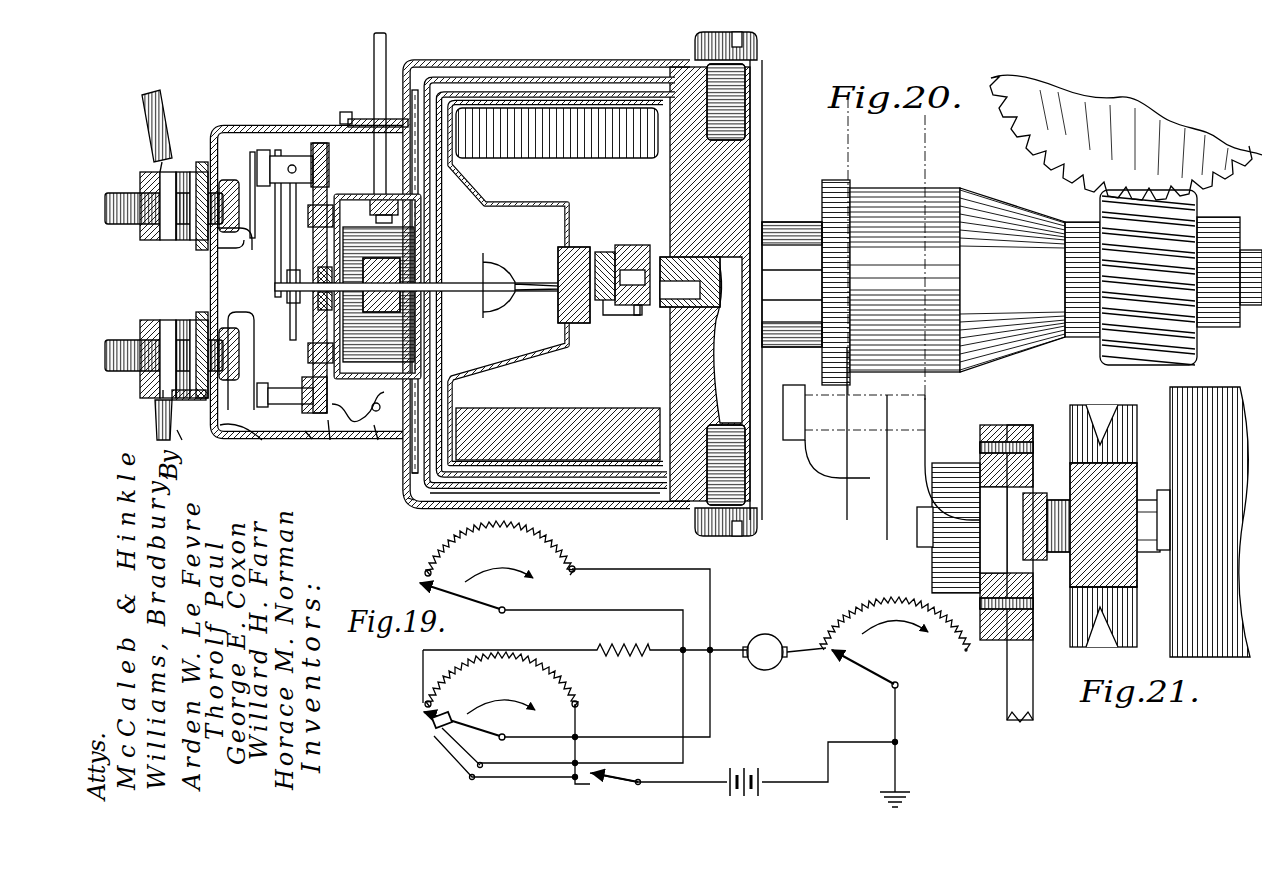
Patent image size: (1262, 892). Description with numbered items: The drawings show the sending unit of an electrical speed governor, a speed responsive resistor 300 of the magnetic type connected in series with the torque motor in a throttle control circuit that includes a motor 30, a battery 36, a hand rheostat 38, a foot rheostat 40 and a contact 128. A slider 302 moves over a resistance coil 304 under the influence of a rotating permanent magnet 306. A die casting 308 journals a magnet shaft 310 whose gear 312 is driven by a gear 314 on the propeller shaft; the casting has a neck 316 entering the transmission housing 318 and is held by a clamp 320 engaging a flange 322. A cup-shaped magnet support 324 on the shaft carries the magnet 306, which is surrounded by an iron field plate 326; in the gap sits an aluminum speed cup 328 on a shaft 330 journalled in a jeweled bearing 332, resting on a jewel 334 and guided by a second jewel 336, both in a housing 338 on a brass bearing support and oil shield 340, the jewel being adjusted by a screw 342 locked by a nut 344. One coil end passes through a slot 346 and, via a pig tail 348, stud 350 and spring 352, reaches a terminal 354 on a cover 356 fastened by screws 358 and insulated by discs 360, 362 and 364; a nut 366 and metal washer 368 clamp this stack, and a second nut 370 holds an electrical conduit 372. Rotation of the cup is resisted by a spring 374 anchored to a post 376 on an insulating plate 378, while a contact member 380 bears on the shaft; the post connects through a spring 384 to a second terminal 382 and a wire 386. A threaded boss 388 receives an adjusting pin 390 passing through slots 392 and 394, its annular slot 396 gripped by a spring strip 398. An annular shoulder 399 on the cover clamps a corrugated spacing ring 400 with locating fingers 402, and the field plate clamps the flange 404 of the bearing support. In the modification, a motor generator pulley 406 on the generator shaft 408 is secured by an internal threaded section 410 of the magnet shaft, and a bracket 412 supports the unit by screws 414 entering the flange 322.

In FIG. 19, the motor 30 is at (780, 636).
In FIG. 19, the battery 36 is at (753, 776).
In FIG. 19, the hand rheostat 38 is at (550, 556).
In FIG. 19, the foot rheostat 40 is at (560, 692).
In FIG. 19, the foot switch contact 128 is at (434, 728).
In FIG. 20, the speed responsive resistor 300 is at (640, 46).
In FIG. 19, the speed responsive resistor 300 is at (967, 656).
In FIG. 20, the slider 302 is at (408, 290).
In FIG. 19, the slider 302 is at (872, 668).
In FIG. 20, the resistance coil 304 is at (418, 241).
In FIG. 19, the resistance coil 304 is at (895, 617).
In FIG. 20, the permanent magnet 306 is at (606, 430).
In FIG. 20, the die casting 308 is at (760, 162).
In FIG. 20, the magnet shaft 310 is at (700, 262).
In FIG. 21, the magnet shaft 310 is at (934, 550).
In FIG. 20, the gear 312 is at (1196, 344).
In FIG. 20, the gear 314 is at (1050, 166).
In FIG. 20, the neck 316 is at (956, 188).
In FIG. 20, the transmission housing 318 is at (816, 474).
In FIG. 20, the clamp 320 is at (822, 448).
In FIG. 20, the flange 322 is at (826, 186).
In FIG. 21, the flange 322 is at (984, 470).
In FIG. 20, the cup-shaped magnet support 324 is at (570, 408).
In FIG. 20, the iron field plate 326 is at (592, 500).
In FIG. 20, the speed cup 328 is at (530, 78).
In FIG. 20, the shaft 330 is at (527, 292).
In FIG. 20, the jeweled bearing 332 is at (318, 298).
In FIG. 20, the jewel 334 is at (608, 250).
In FIG. 20, the second jewel 336 is at (558, 262).
In FIG. 20, the housing 338 is at (610, 302).
In FIG. 20, the combined bearing support and oil shield 340 is at (535, 356).
In FIG. 20, the screw 342 is at (642, 272).
In FIG. 20, the nut 344 is at (638, 316).
In FIG. 20, the slot 346 is at (376, 400).
In FIG. 20, the pig tail 348 is at (329, 420).
In FIG. 20, the stud 350 is at (292, 404).
In FIG. 20, the spring 352 is at (255, 348).
In FIG. 20, the terminal 354 is at (172, 395).
In FIG. 20, the cover 356 is at (308, 440).
In FIG. 20, the screws 358 is at (758, 40).
In FIG. 20, the insulating disc 360 is at (211, 270).
In FIG. 20, the insulating disc 362 is at (200, 248).
In FIG. 20, the insulating disc 364 is at (220, 232).
In FIG. 20, the nut 366 is at (157, 430).
In FIG. 20, the metal washer 368 is at (222, 440).
In FIG. 20, the second nut 370 is at (150, 340).
In FIG. 20, the electrical conduit 372 is at (160, 412).
In FIG. 20, the spring 374 is at (275, 255).
In FIG. 20, the post 376 is at (288, 155).
In FIG. 20, the insulating plate 378 is at (320, 143).
In FIG. 20, the contact member 380 is at (290, 286).
In FIG. 20, the second terminal 382 is at (118, 192).
In FIG. 20, the spring 384 is at (250, 165).
In FIG. 20, the wire 386 is at (142, 120).
In FIG. 20, the threaded boss 388 is at (384, 197).
In FIG. 20, the adjusting pin 390 is at (374, 70).
In FIG. 20, the slot 392 is at (442, 178).
In FIG. 20, the slot 394 is at (365, 128).
In FIG. 20, the annular slot 396 is at (418, 94).
In FIG. 20, the spring strip 398 is at (372, 118).
In FIG. 20, the annular shoulder 399 is at (412, 470).
In FIG. 20, the corrugated spacing ring 400 is at (408, 500).
In FIG. 20, the fingers 402 is at (376, 430).
In FIG. 20, the flange 404 is at (647, 498).
In FIG. 21, the motor generator pulley 406 is at (1122, 640).
In FIG. 21, the generator shaft 408 is at (1120, 514).
In FIG. 21, the internal threaded section 410 is at (1048, 498).
In FIG. 21, the bracket 412 is at (1033, 704).
In FIG. 21, the screws 414 is at (1036, 428).